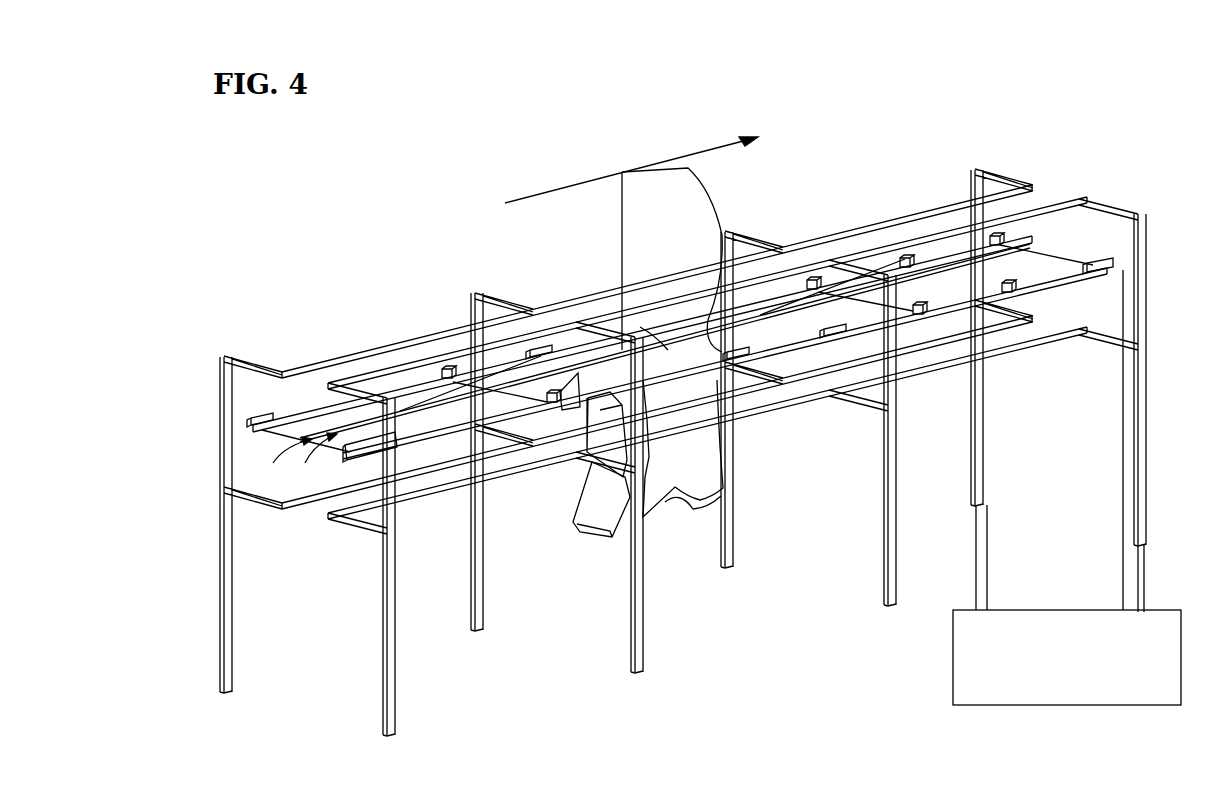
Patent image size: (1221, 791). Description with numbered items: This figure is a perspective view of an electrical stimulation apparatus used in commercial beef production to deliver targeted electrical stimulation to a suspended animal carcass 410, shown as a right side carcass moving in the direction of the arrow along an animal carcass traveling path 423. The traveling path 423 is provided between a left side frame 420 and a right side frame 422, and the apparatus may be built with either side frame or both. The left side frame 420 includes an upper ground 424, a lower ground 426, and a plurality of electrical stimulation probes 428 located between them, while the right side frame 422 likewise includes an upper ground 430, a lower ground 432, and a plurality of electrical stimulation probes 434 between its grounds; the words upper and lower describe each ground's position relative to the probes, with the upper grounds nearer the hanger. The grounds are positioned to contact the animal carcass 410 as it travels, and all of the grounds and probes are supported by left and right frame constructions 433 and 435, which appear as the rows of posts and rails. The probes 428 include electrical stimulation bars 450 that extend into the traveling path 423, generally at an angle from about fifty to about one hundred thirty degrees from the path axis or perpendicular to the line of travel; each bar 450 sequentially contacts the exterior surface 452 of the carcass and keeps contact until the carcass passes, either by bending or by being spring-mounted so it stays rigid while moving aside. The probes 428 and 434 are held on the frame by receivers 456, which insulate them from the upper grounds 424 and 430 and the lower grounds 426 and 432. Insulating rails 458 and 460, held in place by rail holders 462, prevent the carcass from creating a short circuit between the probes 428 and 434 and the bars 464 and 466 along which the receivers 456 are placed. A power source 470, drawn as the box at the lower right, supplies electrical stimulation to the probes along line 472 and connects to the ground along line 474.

The animal carcass 410 is at (675, 245).
The left side frame 420 is at (563, 298).
The right side frame 422 is at (1150, 256).
The animal carcass traveling path 423 is at (898, 237).
The upper ground 424 is at (365, 350).
The lower ground 426 is at (302, 506).
The electrical stimulation probes 428 is at (287, 461).
The upper ground 430 is at (400, 372).
The lower ground 432 is at (448, 483).
The left frame construction 433 is at (228, 380).
The electrical stimulation probes 434 is at (314, 459).
The right frame construction 435 is at (395, 631).
The electrical stimulation bars 450 is at (472, 382).
The exterior surface 452 is at (610, 313).
The receivers 456 is at (563, 398).
The insulating rail 458 is at (337, 422).
The insulating rail 460 is at (783, 336).
The rail holders 462 is at (268, 437).
The bar 464 is at (420, 390).
The bar 466 is at (567, 405).
The power source 470 is at (953, 647).
The line 472 is at (1123, 497).
The line 474 is at (975, 535).